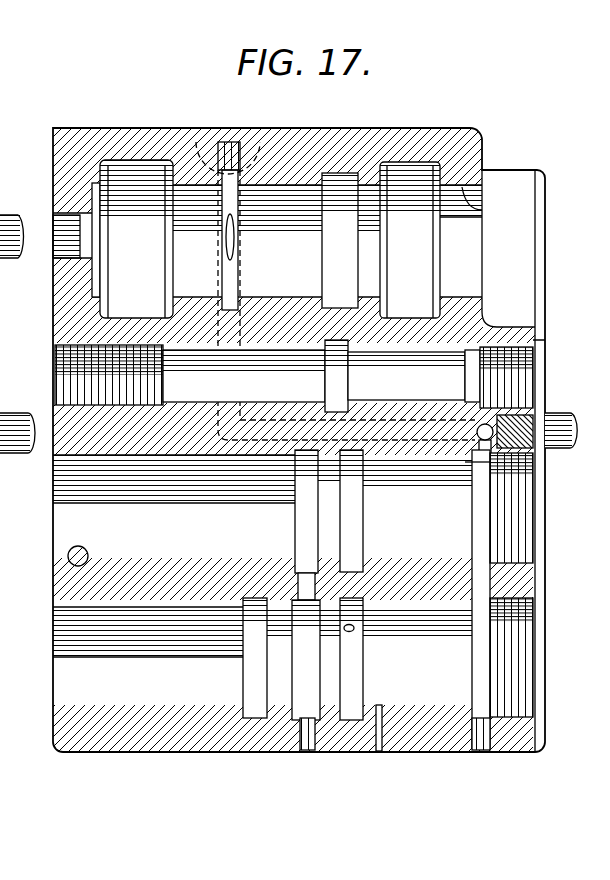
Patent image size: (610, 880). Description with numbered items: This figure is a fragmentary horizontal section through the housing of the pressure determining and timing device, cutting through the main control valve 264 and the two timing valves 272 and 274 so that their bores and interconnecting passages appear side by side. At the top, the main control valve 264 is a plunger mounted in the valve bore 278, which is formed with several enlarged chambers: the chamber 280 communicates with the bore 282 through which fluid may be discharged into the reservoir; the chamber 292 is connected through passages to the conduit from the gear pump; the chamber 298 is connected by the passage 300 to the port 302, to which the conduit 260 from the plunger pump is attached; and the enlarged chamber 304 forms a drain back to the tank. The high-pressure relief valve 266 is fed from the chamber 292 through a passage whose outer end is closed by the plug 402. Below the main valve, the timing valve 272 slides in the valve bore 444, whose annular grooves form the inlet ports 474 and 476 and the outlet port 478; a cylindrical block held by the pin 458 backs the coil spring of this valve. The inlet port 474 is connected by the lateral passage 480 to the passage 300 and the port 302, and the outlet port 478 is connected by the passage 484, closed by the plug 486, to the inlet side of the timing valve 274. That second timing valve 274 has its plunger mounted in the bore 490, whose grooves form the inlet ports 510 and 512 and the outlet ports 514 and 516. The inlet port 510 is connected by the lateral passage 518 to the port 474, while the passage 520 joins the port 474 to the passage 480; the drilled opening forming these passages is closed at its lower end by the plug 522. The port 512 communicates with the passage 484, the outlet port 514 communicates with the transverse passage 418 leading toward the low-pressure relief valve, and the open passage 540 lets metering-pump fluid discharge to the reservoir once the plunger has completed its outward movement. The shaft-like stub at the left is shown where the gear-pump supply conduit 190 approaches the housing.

The input shaft 190 is at (6, 225).
The conduit 260 is at (10, 456).
The main control valve 264 is at (492, 155).
The pressure control or relief valve 266 is at (547, 338).
The timing valve 272 is at (170, 531).
The timing valve 274 is at (146, 686).
The valve bore 278 is at (300, 165).
The enlarged chamber 280 is at (408, 178).
The bore 282 is at (470, 205).
The enlarged chamber 292 is at (340, 300).
The chamber 298 is at (238, 245).
The passage 300 is at (258, 300).
The port 302 is at (546, 410).
The enlarged chamber 304 is at (140, 272).
The plug 402 is at (8, 368).
The transverse passage 418 is at (355, 634).
The valve bore 444 is at (90, 500).
The pin 458 is at (68, 552).
The inlet port or chamber 474 is at (470, 542).
The inlet port or chamber 476 is at (350, 524).
The outlet port or chamber 478 is at (295, 522).
The lateral passage 480 is at (486, 424).
The passage 484 is at (298, 580).
The plug 486 is at (306, 752).
The bore 490 is at (70, 633).
The inlet port or chamber 510 is at (480, 665).
The inlet port or chamber 512 is at (300, 652).
The outlet port or chamber 514 is at (355, 683).
The outlet port or chamber 516 is at (248, 688).
The lateral passage 518 is at (498, 578).
The passage 520 is at (470, 463).
The plug 522 is at (480, 736).
The open passage 540 is at (390, 712).